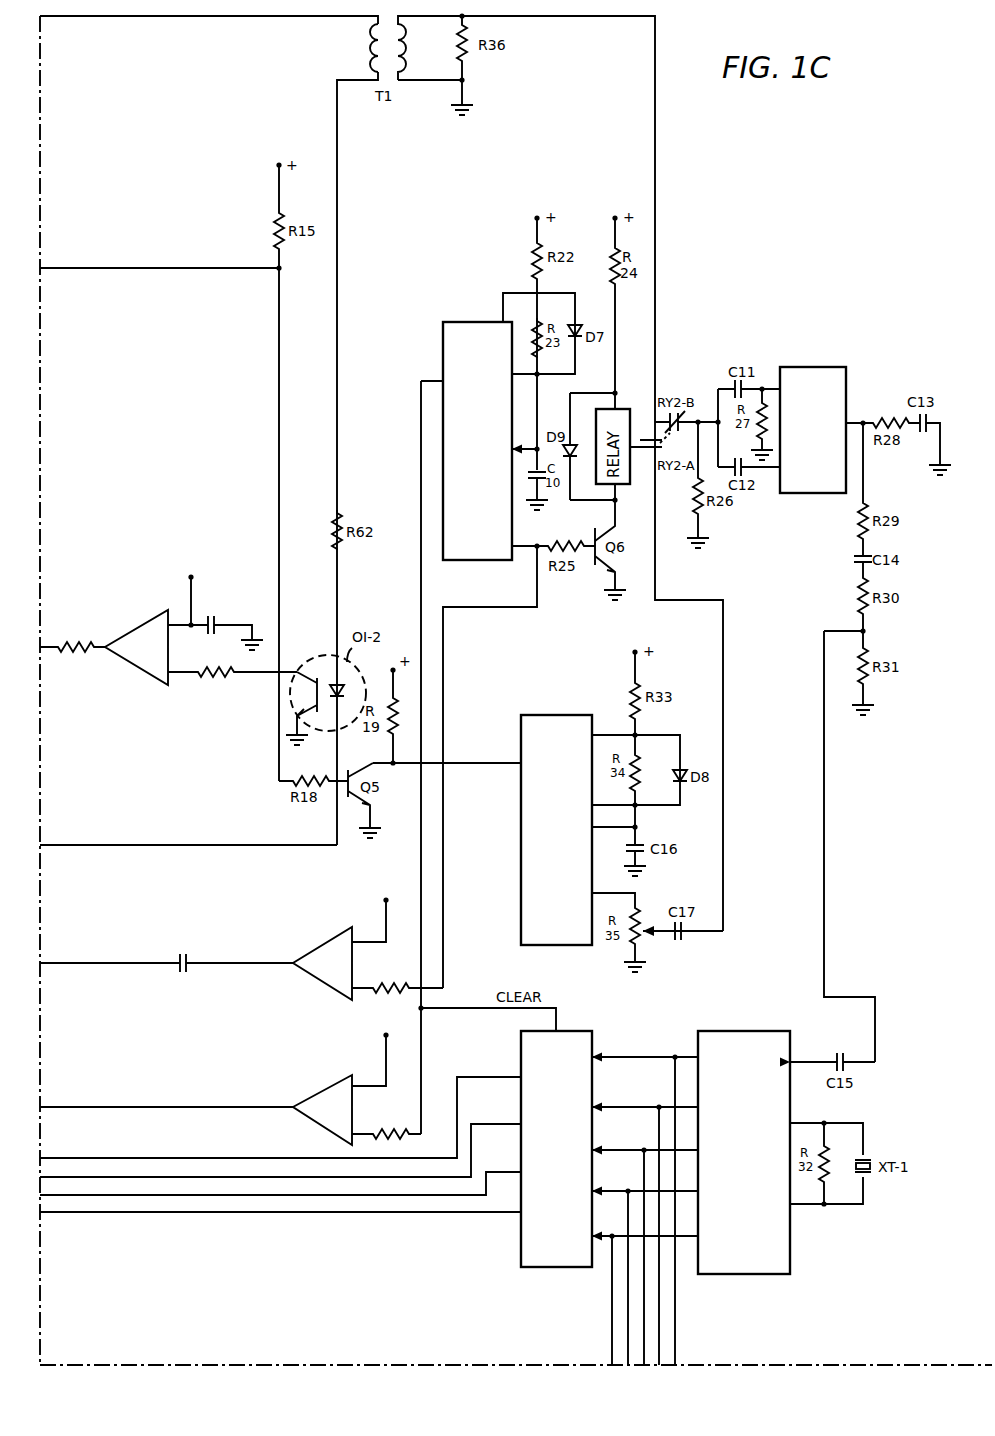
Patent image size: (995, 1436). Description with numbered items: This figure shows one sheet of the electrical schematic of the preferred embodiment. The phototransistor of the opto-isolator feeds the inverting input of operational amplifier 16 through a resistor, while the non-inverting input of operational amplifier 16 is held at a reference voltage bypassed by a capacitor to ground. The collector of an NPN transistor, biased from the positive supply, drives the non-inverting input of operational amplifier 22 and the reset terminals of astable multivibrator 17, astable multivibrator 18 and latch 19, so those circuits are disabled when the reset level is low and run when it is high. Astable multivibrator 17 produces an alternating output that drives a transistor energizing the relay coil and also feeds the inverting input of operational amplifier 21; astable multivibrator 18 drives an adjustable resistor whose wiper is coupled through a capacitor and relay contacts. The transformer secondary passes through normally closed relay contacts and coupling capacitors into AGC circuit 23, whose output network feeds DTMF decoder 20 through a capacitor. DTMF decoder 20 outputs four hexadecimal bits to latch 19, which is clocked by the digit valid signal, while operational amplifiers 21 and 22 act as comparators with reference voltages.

The operational amplifier 16 is at (148, 678).
The astable multivibrator 17 is at (463, 320).
The astable multivibrator 18 is at (560, 713).
The latch 19 is at (519, 1248).
The DTMF decoder 20 is at (736, 1030).
The operational amplifier 21 is at (330, 935).
The operational amplifier 22 is at (330, 1082).
The AGC circuit 23 is at (835, 366).